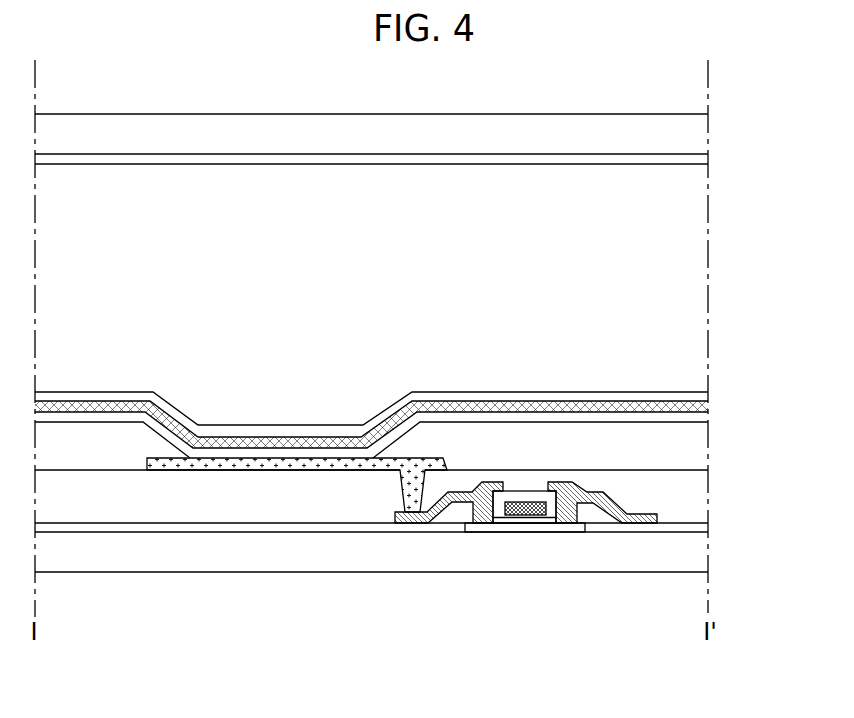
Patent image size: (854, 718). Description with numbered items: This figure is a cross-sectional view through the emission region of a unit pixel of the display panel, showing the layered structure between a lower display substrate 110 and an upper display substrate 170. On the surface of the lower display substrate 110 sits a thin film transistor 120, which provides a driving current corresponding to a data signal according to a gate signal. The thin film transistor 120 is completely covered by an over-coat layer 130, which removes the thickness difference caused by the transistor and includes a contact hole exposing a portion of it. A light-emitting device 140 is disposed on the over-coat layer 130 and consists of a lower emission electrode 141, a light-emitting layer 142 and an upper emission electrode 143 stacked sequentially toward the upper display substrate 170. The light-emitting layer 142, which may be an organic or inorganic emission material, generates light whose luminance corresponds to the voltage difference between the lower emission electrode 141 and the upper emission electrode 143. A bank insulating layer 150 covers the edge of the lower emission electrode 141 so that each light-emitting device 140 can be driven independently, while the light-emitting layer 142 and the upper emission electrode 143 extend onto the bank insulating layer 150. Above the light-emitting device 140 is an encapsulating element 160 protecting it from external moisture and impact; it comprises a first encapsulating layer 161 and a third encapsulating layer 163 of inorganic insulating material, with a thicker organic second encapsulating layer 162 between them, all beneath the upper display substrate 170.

The lower display substrate 110 is at (699, 549).
The thin film transistor 120 is at (515, 524).
The over-coat layer 130 is at (699, 498).
The light-emitting device 140 is at (371, 541).
The lower emission electrode 141 is at (280, 462).
The light-emitting layer 142 is at (242, 452).
The upper emission electrode 143 is at (173, 424).
The bank insulating layer 150 is at (699, 449).
The encapsulating element 160 is at (423, 287).
The first encapsulating layer 161 is at (395, 405).
The second encapsulating layer 162 is at (699, 266).
The third encapsulating layer 163 is at (699, 162).
The upper display substrate 170 is at (699, 137).